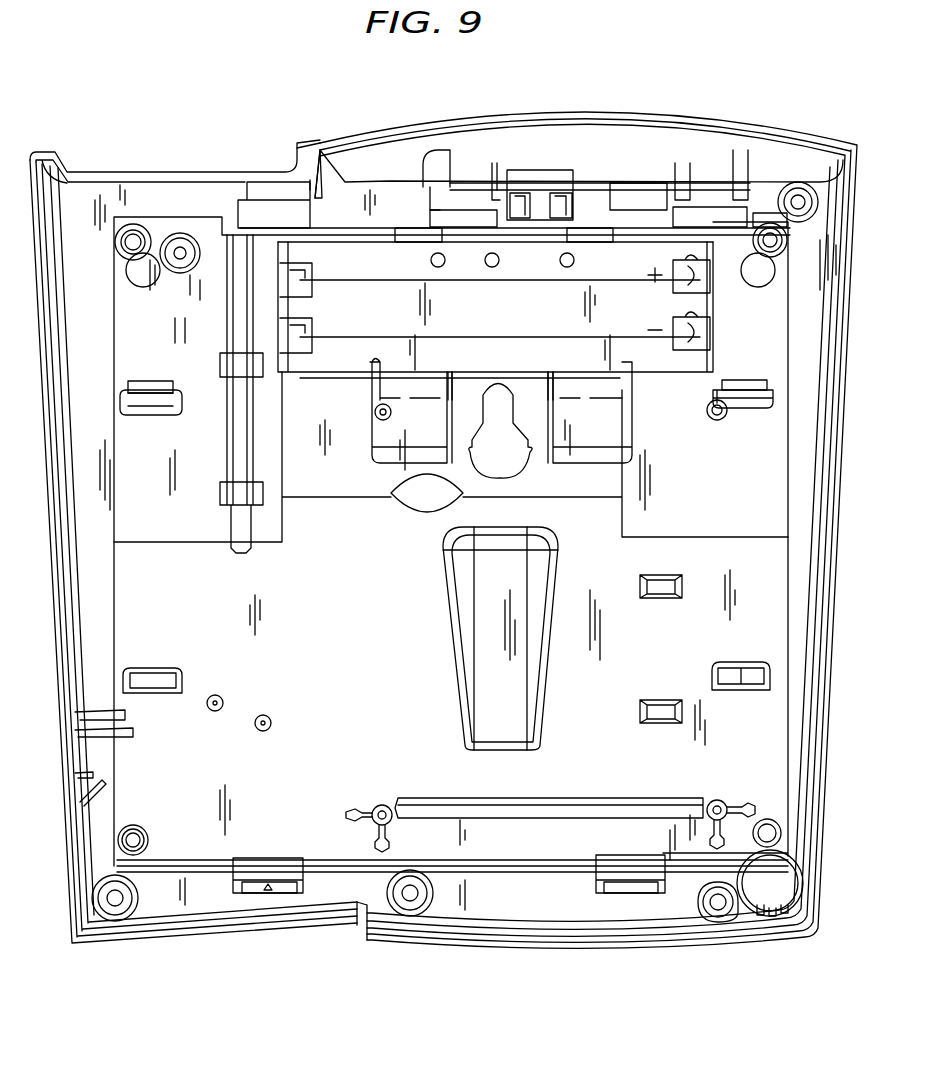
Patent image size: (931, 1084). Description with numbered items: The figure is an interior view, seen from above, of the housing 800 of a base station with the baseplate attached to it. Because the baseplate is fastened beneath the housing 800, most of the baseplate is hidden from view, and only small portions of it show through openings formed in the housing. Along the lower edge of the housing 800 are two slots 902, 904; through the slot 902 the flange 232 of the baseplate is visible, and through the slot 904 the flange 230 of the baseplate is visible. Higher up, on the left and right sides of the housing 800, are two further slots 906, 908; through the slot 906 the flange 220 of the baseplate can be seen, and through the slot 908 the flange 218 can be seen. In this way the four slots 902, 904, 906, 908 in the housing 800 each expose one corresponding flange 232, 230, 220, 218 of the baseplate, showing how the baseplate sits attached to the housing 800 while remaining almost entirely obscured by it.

The housing 800 is at (186, 945).
The flange 220 is at (143, 378).
The slot 906 is at (153, 412).
The flange 218 is at (745, 380).
The slot 908 is at (748, 410).
The slot 902 is at (307, 880).
The flange 232 is at (272, 895).
The slot 904 is at (593, 880).
The flange 230 is at (650, 896).